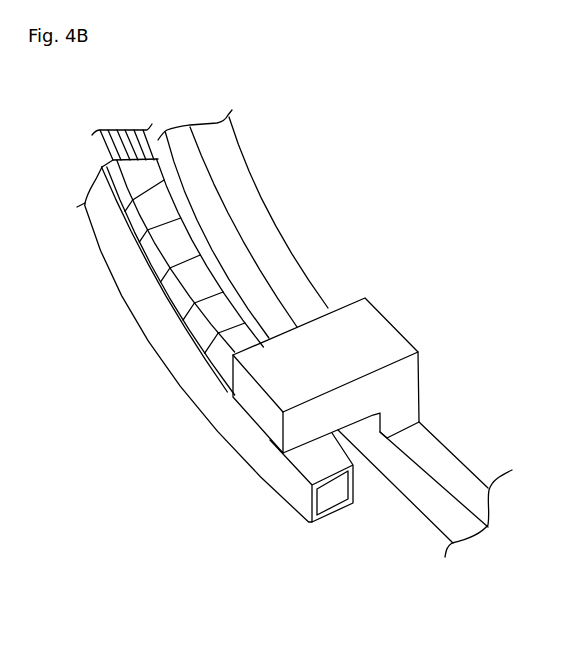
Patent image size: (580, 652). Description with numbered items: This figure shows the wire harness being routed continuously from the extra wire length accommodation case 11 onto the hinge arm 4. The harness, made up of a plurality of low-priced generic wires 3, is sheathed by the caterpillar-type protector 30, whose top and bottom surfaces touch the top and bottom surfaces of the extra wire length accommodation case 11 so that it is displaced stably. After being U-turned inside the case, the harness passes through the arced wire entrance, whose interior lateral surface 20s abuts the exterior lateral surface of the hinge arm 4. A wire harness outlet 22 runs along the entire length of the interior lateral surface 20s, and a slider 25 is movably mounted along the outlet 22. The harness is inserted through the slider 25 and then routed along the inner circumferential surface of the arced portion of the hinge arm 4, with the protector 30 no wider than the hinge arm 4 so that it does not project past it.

The wires 3 is at (146, 142).
The hinge arm 4 is at (166, 362).
The extra wire length accommodation case 11 is at (434, 508).
The interior lateral surface 20s is at (403, 480).
The wire harness outlet 22 is at (244, 197).
The slider 25 is at (261, 410).
The caterpillar-type protector 30 is at (176, 247).